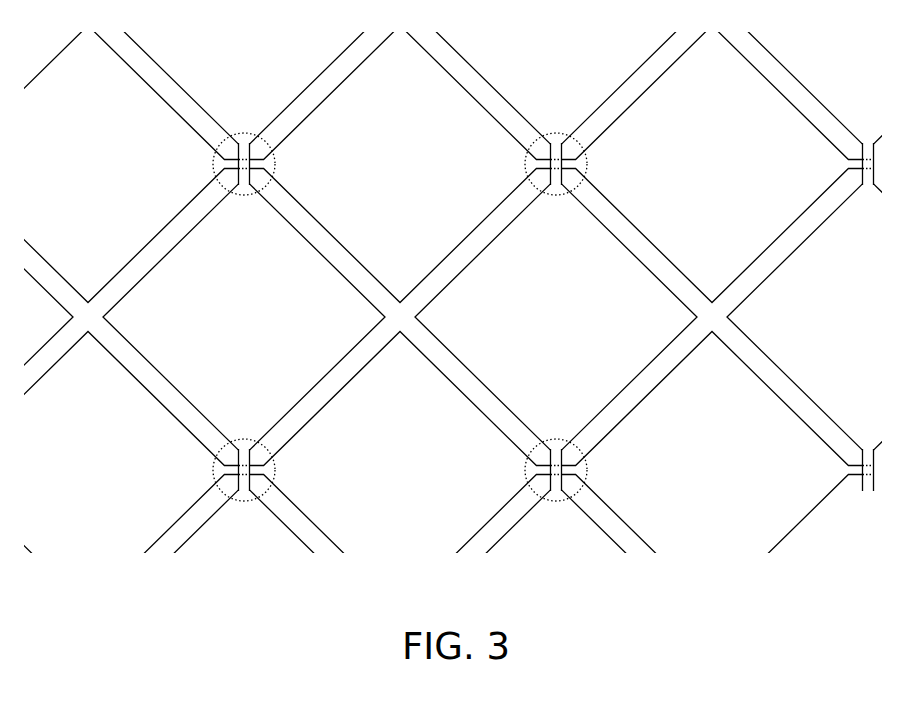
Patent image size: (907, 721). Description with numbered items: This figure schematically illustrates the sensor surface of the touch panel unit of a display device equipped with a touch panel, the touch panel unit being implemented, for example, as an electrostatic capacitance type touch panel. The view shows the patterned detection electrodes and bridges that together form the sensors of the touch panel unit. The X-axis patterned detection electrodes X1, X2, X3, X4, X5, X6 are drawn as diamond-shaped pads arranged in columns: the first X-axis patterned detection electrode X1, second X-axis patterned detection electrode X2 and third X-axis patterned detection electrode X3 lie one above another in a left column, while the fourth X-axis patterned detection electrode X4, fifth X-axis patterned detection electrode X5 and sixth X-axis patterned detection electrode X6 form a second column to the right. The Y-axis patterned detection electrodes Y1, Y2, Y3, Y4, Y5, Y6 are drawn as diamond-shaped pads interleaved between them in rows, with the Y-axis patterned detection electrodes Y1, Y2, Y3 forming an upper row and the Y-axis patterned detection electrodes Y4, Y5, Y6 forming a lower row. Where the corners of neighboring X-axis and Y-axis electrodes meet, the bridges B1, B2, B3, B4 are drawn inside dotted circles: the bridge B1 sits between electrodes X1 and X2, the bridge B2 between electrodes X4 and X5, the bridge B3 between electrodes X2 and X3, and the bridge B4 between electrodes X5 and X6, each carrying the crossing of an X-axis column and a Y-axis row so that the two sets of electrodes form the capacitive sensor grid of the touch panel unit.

The X-axis patterned detection electrode X1 is at (233, 73).
The X-axis patterned detection electrode X2 is at (233, 324).
The X-axis patterned detection electrode X3 is at (233, 536).
The X-axis patterned detection electrode X4 is at (545, 73).
The X-axis patterned detection electrode X5 is at (545, 324).
The X-axis patterned detection electrode X6 is at (545, 536).
The Y-axis patterned detection electrode Y1 is at (81, 174).
The Y-axis patterned detection electrode Y2 is at (391, 174).
The Y-axis patterned detection electrode Y3 is at (709, 175).
The Y-axis patterned detection electrode Y4 is at (81, 472).
The Y-axis patterned detection electrode Y5 is at (391, 473).
The Y-axis patterned detection electrode Y6 is at (709, 474).
The bridge B1 is at (266, 141).
The bridge B2 is at (578, 141).
The bridge B3 is at (266, 447).
The bridge B4 is at (578, 447).